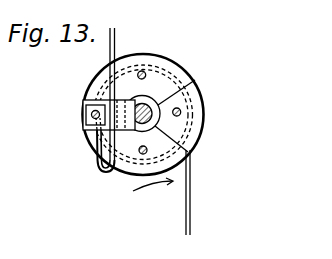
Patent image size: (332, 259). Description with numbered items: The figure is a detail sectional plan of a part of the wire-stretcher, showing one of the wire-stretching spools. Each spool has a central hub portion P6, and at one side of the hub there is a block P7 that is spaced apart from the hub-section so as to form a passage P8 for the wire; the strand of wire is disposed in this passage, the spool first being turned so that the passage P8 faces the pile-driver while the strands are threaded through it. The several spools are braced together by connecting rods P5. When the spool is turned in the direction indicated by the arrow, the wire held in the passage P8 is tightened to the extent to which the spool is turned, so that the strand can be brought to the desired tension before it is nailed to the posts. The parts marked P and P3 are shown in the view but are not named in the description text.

The lever rod P is at (185, 156).
The disk P3 is at (197, 153).
The rods P5 is at (181, 113).
The central hub portion P6 is at (178, 84).
The block P7 is at (103, 148).
The passage P8 is at (128, 100).